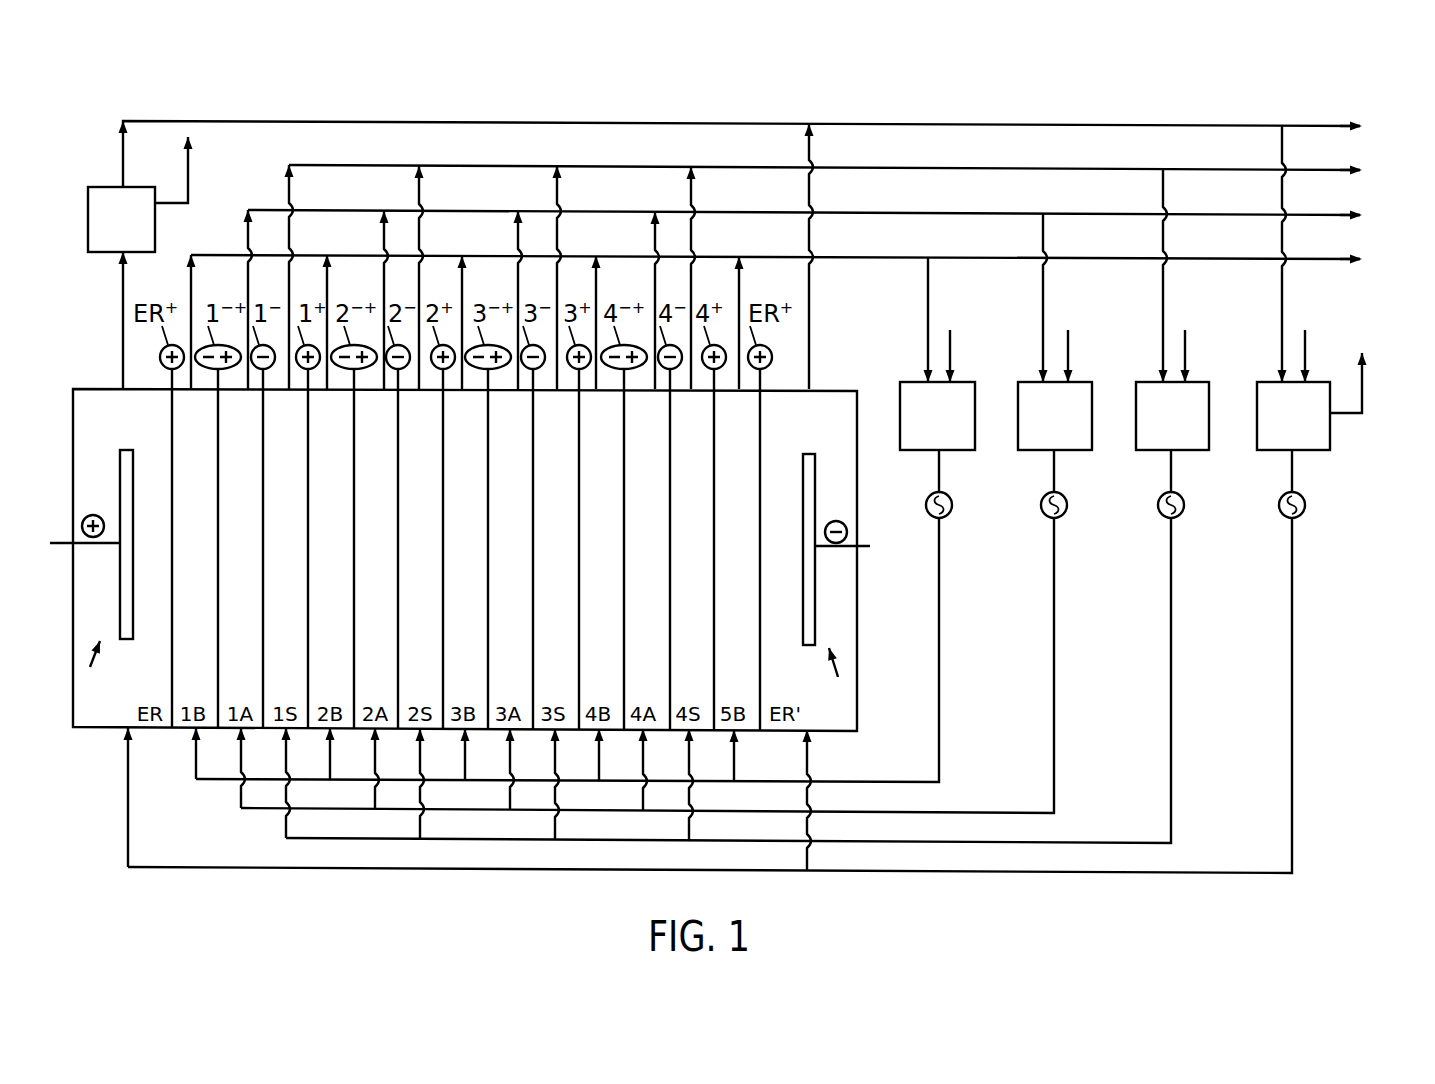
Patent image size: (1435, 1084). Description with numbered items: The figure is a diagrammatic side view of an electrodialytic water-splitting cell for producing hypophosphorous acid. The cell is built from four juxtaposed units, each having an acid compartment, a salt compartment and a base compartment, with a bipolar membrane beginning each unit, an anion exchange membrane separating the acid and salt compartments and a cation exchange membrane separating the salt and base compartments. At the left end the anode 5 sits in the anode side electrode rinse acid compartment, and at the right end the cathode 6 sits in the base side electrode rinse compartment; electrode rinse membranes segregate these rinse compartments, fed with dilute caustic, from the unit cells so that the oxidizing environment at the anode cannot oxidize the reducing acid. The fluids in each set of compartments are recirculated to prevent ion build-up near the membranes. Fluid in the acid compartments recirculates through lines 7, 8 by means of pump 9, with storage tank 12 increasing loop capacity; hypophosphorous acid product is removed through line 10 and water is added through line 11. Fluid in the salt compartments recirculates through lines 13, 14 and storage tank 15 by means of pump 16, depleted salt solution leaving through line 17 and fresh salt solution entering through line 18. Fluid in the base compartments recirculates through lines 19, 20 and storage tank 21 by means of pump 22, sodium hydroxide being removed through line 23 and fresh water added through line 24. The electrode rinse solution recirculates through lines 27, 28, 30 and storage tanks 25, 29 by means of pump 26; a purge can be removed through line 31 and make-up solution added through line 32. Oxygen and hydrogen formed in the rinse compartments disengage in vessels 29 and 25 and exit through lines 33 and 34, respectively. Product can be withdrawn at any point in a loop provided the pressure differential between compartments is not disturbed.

The anode 5 is at (113, 540).
The cathode 6 is at (815, 545).
The line 7 is at (260, 209).
The line 8 is at (262, 810).
The pump 9 is at (1043, 511).
The line 10 is at (1330, 214).
The line 11 is at (1071, 347).
The storage tank 12 is at (1055, 332).
The line 13 is at (307, 163).
The line 14 is at (345, 839).
The storage tank 15 is at (1172, 309).
The pump 16 is at (1160, 511).
The line 17 is at (1330, 169).
The line 18 is at (1188, 347).
The line 19 is at (212, 253).
The line 20 is at (939, 752).
The storage tank 21 is at (937, 354).
The pump 22 is at (927, 507).
The line 23 is at (1330, 258).
The line 24 is at (953, 347).
The storage tank 25 is at (1293, 288).
The pump 26 is at (1280, 511).
The line 27 is at (296, 869).
The line 28 is at (120, 300).
The storage tank 29 is at (121, 219).
The line 30 is at (325, 120).
The line 31 is at (1330, 125).
The line 32 is at (1308, 347).
The line 33 is at (190, 170).
The line 34 is at (1367, 382).